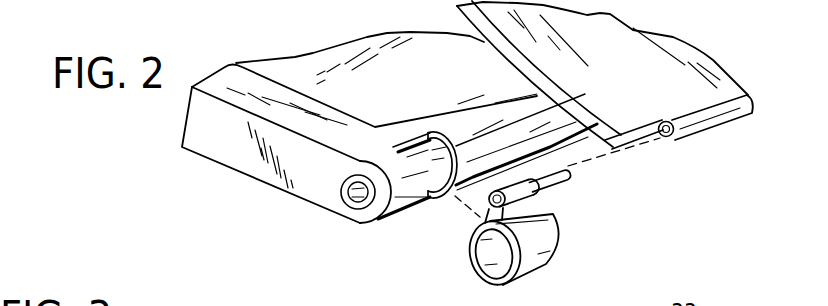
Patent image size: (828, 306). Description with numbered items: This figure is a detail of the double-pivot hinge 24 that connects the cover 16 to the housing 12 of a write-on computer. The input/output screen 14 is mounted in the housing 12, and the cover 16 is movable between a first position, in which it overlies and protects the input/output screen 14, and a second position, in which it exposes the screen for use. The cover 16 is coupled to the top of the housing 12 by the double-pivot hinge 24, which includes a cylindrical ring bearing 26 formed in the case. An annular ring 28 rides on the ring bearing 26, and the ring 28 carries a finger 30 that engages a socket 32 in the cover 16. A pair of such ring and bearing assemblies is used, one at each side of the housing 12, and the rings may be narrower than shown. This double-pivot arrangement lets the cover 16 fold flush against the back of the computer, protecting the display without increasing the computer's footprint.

The housing 12 is at (233, 142).
The input/output screen 14 is at (400, 88).
The cover 16 is at (630, 75).
The double-pivot hinge 24 is at (432, 213).
The cylindrical ring bearing 26 is at (433, 153).
The annular ring 28 is at (547, 253).
The finger 30 is at (559, 183).
The socket 32 is at (666, 137).